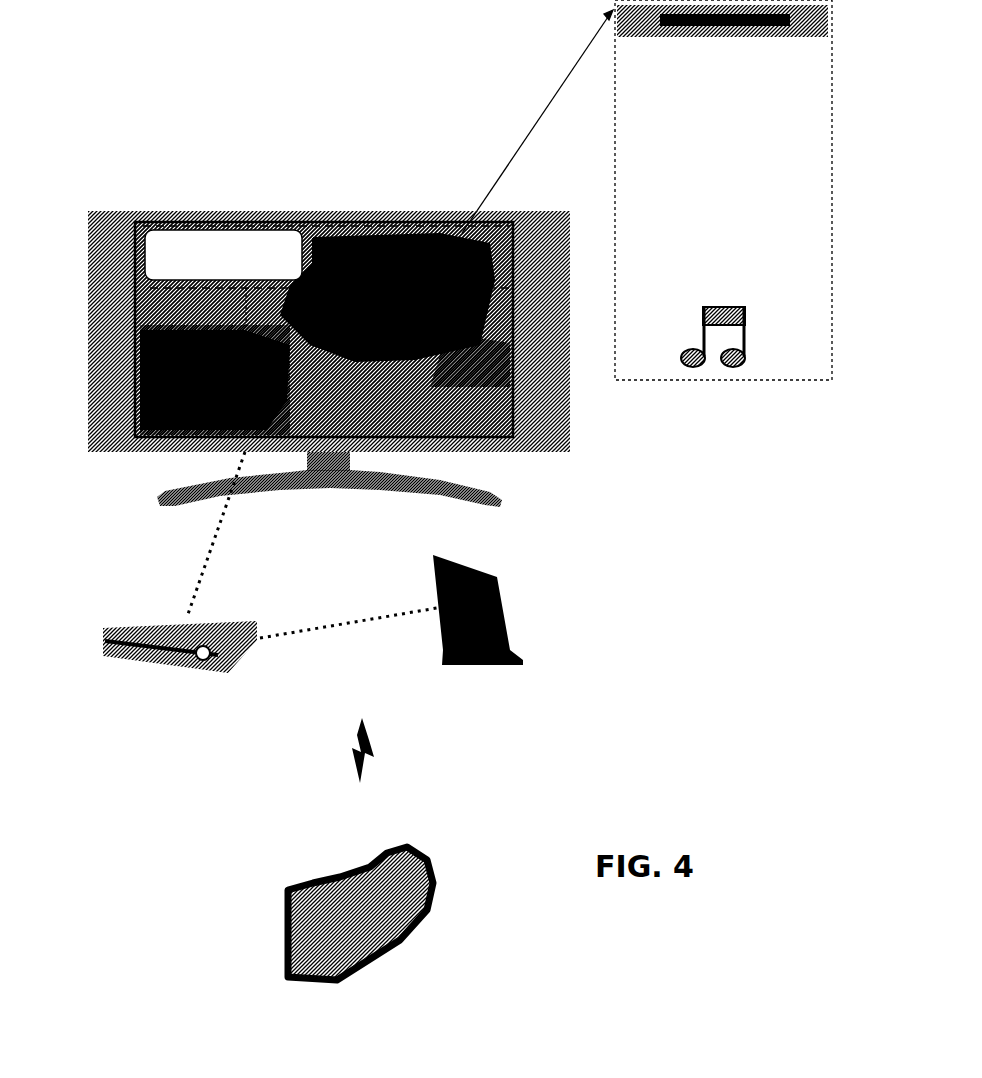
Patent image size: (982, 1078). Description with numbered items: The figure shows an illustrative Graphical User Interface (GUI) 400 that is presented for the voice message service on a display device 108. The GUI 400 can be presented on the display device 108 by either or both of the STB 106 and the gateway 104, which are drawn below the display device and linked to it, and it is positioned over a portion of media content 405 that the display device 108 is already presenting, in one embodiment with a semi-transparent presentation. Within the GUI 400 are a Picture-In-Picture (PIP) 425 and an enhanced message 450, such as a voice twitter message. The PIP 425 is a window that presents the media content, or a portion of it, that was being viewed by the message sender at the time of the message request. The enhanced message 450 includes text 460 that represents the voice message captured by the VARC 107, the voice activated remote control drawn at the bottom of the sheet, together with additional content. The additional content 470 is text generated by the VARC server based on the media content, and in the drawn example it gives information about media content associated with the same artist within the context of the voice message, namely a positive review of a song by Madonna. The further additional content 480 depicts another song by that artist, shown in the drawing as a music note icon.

The display device 108 is at (103, 211).
The Graphical User Interface (GUI) 400 is at (302, 237).
The Picture-In-Picture (PIP) 425 is at (260, 271).
The enhanced message 450 is at (420, 271).
The media content 405 is at (443, 415).
The text 460 is at (817, 83).
The additional content 470 is at (797, 198).
The additional content 480 is at (747, 332).
The gateway 104 is at (508, 616).
The STB 106 is at (132, 625).
The VARC 107 is at (358, 882).